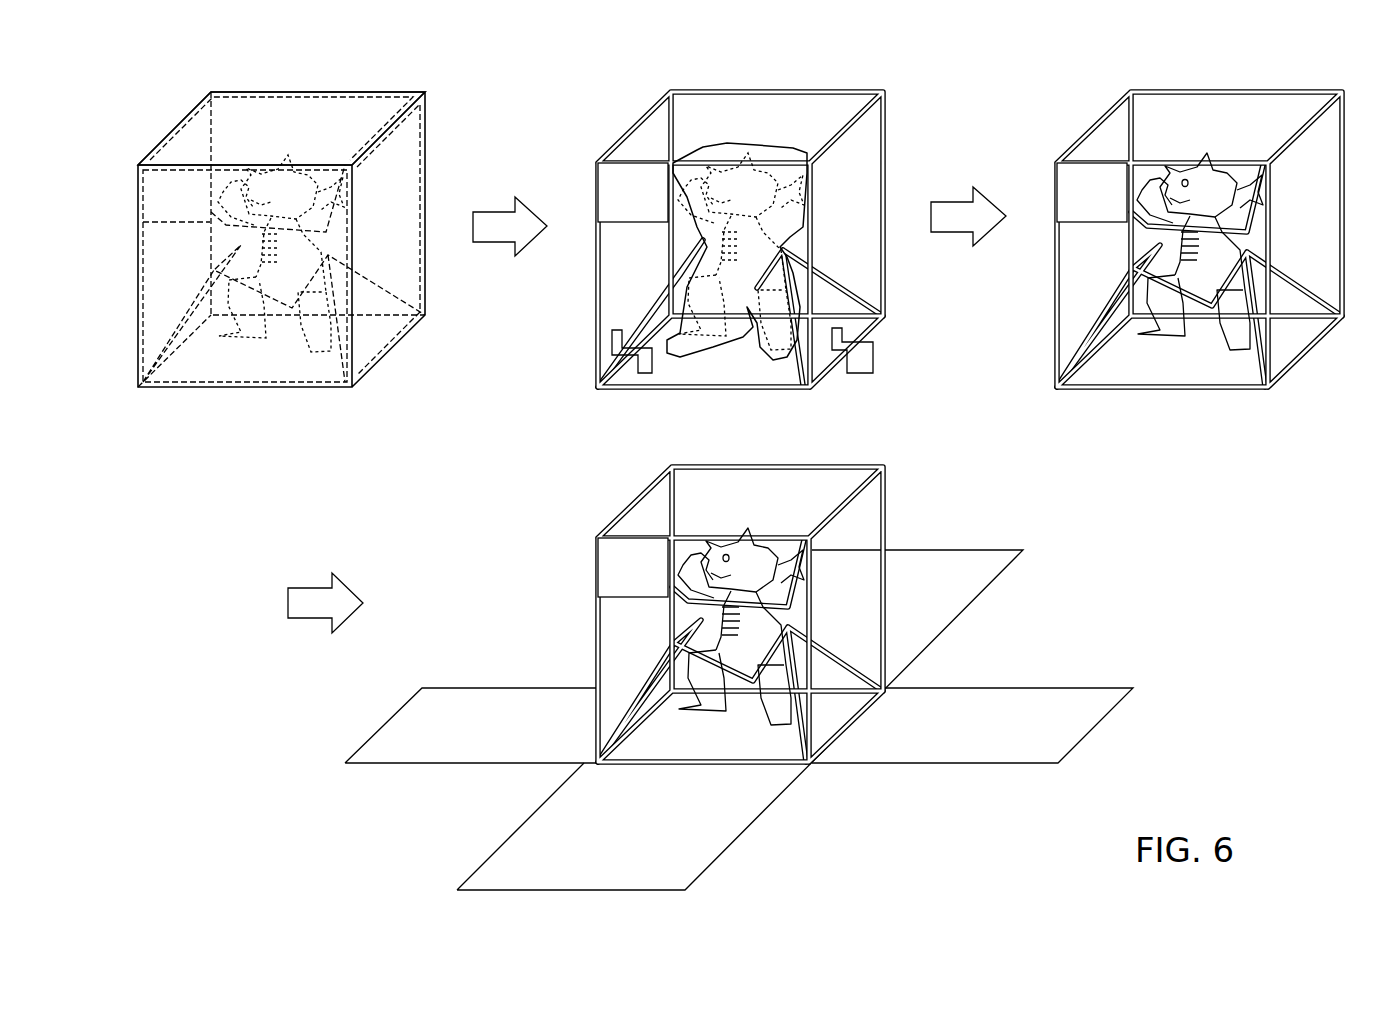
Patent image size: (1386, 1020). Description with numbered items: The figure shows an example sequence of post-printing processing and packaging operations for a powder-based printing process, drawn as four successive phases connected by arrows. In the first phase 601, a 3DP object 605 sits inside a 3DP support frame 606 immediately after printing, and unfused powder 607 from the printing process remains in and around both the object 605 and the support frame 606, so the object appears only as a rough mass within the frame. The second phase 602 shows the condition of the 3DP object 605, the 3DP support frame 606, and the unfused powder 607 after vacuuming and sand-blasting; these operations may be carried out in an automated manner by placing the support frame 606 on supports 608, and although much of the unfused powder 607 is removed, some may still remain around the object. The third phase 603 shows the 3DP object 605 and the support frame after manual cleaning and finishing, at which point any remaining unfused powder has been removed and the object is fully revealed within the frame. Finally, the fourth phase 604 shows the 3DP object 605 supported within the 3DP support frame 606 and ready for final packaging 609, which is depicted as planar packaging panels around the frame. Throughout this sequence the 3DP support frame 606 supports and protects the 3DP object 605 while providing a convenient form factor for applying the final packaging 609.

The phase 601 is at (370, 76).
The phase 602 is at (828, 76).
The phase 603 is at (1288, 76).
The phase 604 is at (814, 824).
The 3DP object 605 is at (300, 268).
The 3DP support frame 606 is at (180, 122).
The unfused powder 607 is at (306, 120).
The supports 608 is at (633, 372).
The final packaging 609 is at (482, 748).